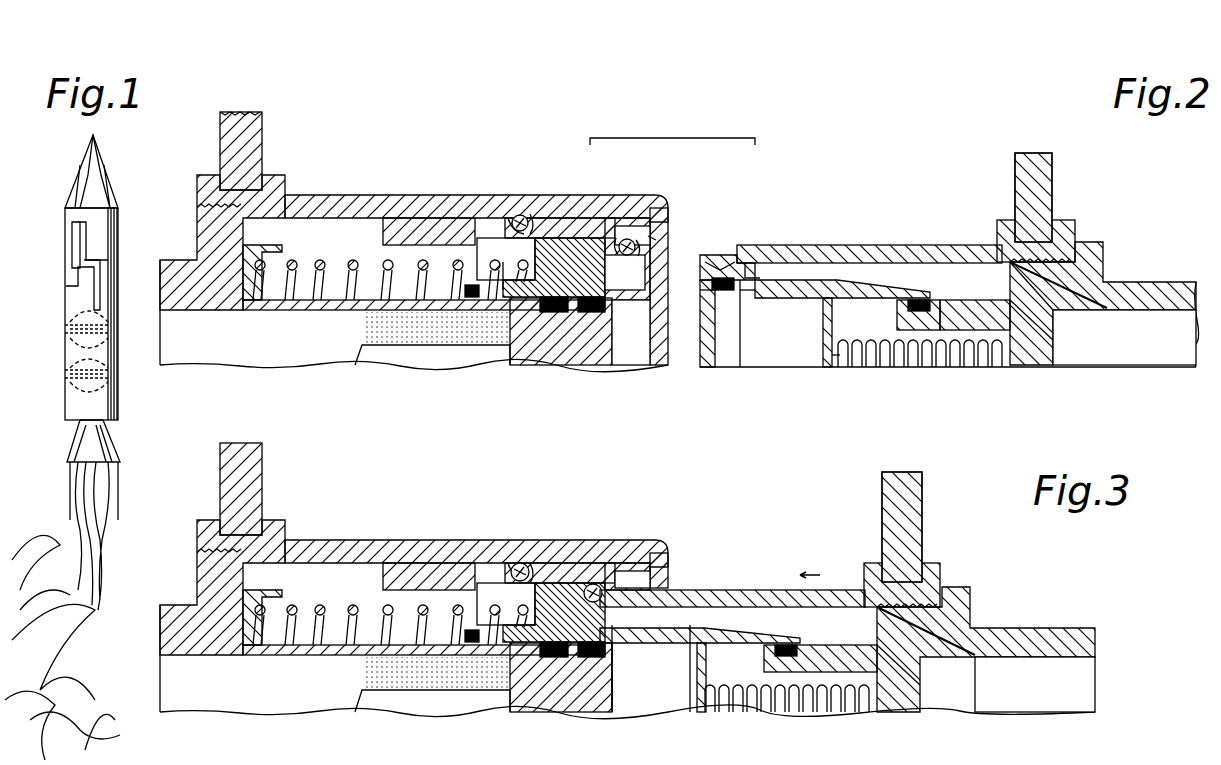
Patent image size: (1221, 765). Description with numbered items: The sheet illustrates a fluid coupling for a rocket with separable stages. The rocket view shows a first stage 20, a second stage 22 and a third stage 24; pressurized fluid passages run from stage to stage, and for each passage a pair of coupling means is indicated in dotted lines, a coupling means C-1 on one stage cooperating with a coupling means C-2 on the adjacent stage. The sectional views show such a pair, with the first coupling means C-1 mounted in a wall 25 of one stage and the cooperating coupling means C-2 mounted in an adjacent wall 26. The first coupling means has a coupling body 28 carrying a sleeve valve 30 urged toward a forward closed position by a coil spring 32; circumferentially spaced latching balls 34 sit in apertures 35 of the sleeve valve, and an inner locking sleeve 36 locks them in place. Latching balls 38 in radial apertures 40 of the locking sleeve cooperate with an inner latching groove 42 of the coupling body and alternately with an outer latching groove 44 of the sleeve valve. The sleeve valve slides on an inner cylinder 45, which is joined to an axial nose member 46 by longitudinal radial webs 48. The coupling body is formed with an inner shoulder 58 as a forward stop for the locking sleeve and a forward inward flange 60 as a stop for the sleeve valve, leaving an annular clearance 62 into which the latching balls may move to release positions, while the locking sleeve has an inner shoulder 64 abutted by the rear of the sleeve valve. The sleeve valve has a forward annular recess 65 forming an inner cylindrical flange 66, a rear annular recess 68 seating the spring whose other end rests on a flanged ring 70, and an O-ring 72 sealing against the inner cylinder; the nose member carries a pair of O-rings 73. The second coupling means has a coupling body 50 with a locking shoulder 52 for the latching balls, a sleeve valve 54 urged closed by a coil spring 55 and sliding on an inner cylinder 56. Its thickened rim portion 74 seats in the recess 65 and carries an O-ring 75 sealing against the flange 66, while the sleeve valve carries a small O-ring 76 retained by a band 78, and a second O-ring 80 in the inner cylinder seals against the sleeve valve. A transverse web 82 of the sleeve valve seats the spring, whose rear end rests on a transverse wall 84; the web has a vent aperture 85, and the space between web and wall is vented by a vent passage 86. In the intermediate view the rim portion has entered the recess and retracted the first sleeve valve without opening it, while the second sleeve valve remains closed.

In FIG. 1, the first stage 20 is at (118, 404).
In FIG. 1, the second stage 22 is at (118, 350).
In FIG. 1, the third stage 24 is at (118, 236).
In FIG. 1, the coupling means C-1 is at (70, 395).
In FIG. 2, the coupling means C-1 is at (456, 186).
In FIG. 3, the coupling means C-1 is at (409, 534).
In FIG. 1, the cooperating coupling means C-2 is at (70, 374).
In FIG. 2, the cooperating coupling means C-2 is at (875, 241).
In FIG. 3, the cooperating coupling means C-2 is at (760, 585).
In FIG. 2, the wall 25 is at (262, 130).
In FIG. 2, the adjacent wall 26 is at (1052, 180).
In FIG. 2, the coupling body 28 is at (352, 196).
In FIG. 2, the sleeve valve 30 is at (570, 242).
In FIG. 3, the sleeve valve 30 is at (520, 640).
In FIG. 2, the coil spring 32 is at (322, 262).
In FIG. 3, the coil spring 32 is at (355, 607).
In FIG. 2, the latching balls 34 is at (627, 238).
In FIG. 3, the latching balls 34 is at (593, 584).
In FIG. 2, the apertures 35 is at (640, 240).
In FIG. 2, the inner locking sleeve 36 is at (405, 225).
In FIG. 3, the inner locking sleeve 36 is at (430, 570).
In FIG. 2, the latching balls 38 is at (531, 214).
In FIG. 3, the latching balls 38 is at (531, 563).
In FIG. 2, the radial apertures 40 is at (513, 216).
In FIG. 3, the radial apertures 40 is at (513, 562).
In FIG. 2, the inner circumferential latching groove 42 is at (519, 214).
In FIG. 3, the inner circumferential latching groove 42 is at (519, 562).
In FIG. 2, the outer circumferential latching groove 44 is at (535, 238).
In FIG. 2, the inner cylinder 45 is at (340, 311).
In FIG. 2, the axial nose member 46 is at (608, 345).
In FIG. 3, the axial nose member 46 is at (600, 700).
In FIG. 2, the longitudinal radial webs 48 is at (425, 347).
In FIG. 2, the coupling body 50 is at (825, 248).
In FIG. 2, the locking shoulder 52 is at (720, 255).
In FIG. 2, the sleeve valve 54 is at (860, 284).
In FIG. 3, the sleeve valve 54 is at (770, 630).
In FIG. 2, the coil spring 55 is at (880, 360).
In FIG. 3, the coil spring 55 is at (830, 710).
In FIG. 2, the inner cylinder 56 is at (950, 300).
In FIG. 2, the inner circumferential shoulder 58 is at (618, 240).
In FIG. 2, the forward radially inward flange 60 is at (668, 235).
In FIG. 2, the annular clearance 62 is at (655, 230).
In FIG. 3, the annular clearance 62 is at (650, 572).
In FIG. 2, the inner circumferential shoulder 64 is at (488, 238).
In FIG. 2, the annular recess 65 is at (640, 268).
In FIG. 2, the inner cylindrical flange 66 is at (640, 305).
In FIG. 2, the annular recess 68 is at (503, 266).
In FIG. 2, the flanged ring 70 is at (275, 250).
In FIG. 2, the O-ring 72 is at (470, 300).
In FIG. 2, the O-rings 73 is at (585, 313).
In FIG. 2, the thickened rim portion 74 is at (735, 280).
In FIG. 2, the O-ring 75 is at (715, 290).
In FIG. 2, the small O-ring 76 is at (745, 295).
In FIG. 2, the band 78 is at (770, 278).
In FIG. 2, the second O-ring 80 is at (905, 318).
In FIG. 2, the transverse wall or web 82 is at (822, 340).
In FIG. 2, the transverse wall 84 is at (1020, 352).
In FIG. 2, the vent aperture 85 is at (830, 365).
In FIG. 2, the vent passage 86 is at (1070, 300).